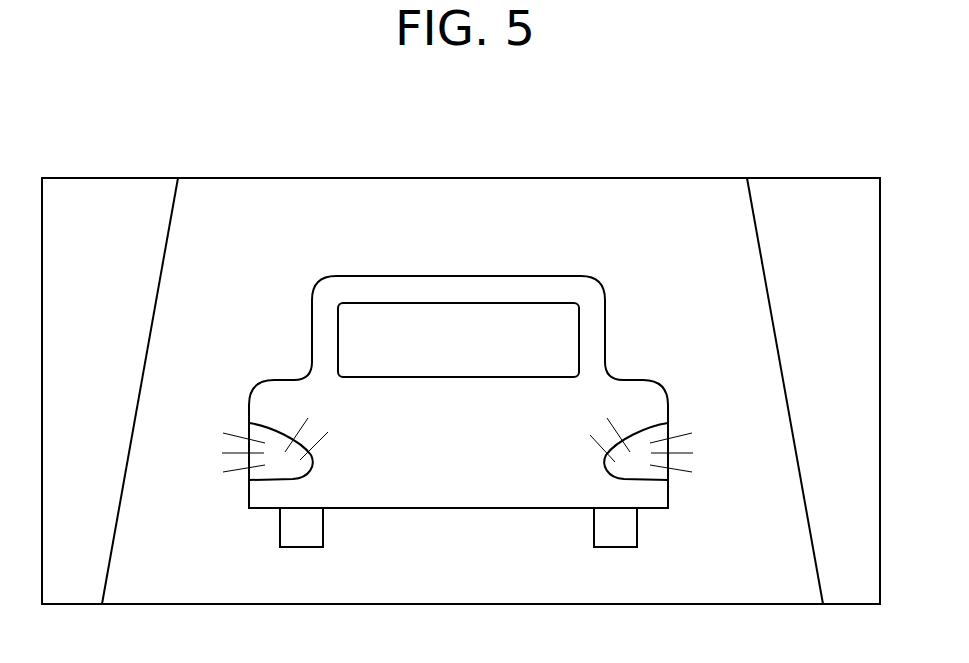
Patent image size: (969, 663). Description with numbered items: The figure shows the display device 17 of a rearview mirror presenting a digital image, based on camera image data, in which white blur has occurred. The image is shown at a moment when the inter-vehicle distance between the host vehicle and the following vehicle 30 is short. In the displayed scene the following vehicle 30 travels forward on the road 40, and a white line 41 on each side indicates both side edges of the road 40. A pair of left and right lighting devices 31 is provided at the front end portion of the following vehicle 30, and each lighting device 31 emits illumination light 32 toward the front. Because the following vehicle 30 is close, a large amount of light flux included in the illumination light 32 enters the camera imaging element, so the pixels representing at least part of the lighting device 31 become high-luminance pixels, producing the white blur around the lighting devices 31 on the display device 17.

The display device 17 is at (803, 178).
The road 40 is at (223, 210).
The white line 41 is at (152, 316).
The following vehicle 30 is at (632, 303).
The lighting device 31 is at (277, 430).
The illumination light 32 is at (318, 442).